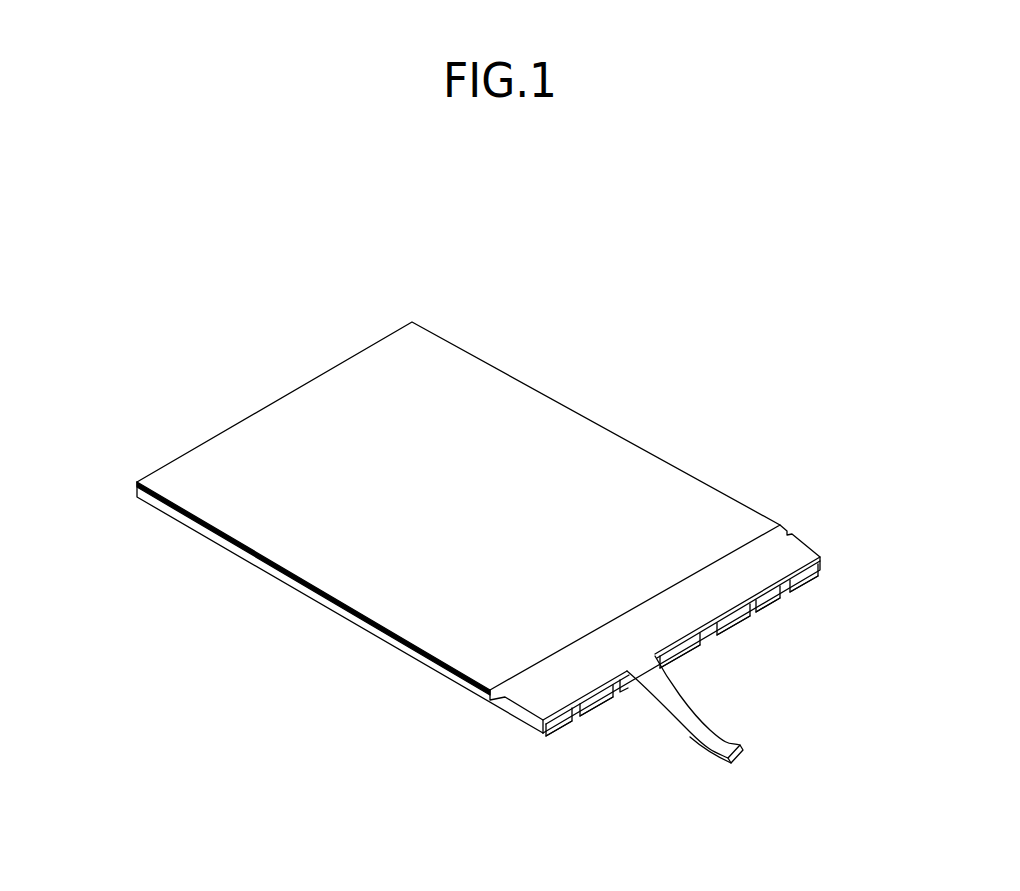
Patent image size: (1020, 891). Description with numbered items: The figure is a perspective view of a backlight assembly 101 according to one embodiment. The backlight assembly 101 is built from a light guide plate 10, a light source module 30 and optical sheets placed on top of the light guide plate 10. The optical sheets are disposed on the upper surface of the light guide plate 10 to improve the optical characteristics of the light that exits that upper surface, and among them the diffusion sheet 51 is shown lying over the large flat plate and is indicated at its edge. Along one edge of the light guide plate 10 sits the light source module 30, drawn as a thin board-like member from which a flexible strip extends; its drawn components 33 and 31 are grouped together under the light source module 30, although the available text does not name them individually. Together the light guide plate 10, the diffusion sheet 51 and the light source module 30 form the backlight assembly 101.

The backlight assembly 101 is at (518, 248).
The light guide plate 10 is at (128, 493).
The diffusion sheet 51 is at (136, 481).
The light source module 30 is at (882, 542).
The circuit board 33 is at (780, 550).
The connector 31 is at (782, 591).